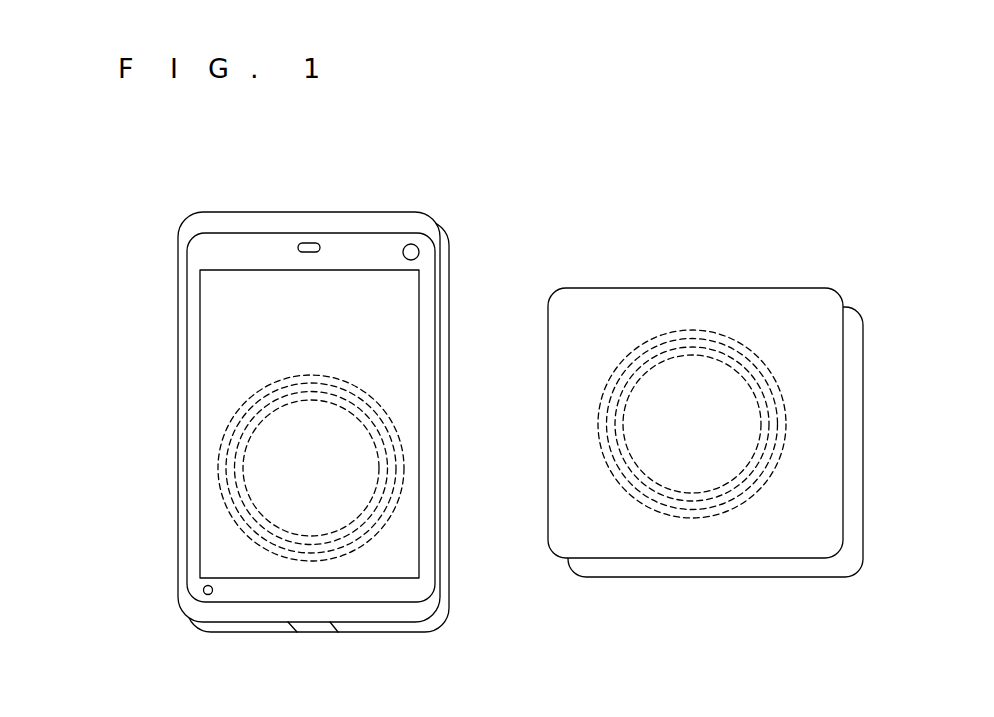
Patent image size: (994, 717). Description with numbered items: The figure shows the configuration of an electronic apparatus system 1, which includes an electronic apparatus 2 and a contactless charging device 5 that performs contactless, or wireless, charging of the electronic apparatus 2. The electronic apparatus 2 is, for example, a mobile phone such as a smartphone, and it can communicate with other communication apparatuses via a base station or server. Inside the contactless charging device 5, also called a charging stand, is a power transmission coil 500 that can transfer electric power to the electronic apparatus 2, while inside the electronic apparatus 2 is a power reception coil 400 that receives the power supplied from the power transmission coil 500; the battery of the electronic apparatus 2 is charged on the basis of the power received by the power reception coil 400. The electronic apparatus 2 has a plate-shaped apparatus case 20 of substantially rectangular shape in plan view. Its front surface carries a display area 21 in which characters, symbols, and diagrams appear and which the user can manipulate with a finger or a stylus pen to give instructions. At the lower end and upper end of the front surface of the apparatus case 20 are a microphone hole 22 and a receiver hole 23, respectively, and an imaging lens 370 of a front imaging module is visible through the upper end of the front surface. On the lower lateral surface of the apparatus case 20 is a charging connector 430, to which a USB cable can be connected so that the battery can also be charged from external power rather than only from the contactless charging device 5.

The electronic apparatus system 1 is at (506, 192).
The electronic apparatus 2 is at (357, 211).
The contactless charging device 5 is at (760, 287).
The apparatus case 20 is at (243, 222).
The display area 21 is at (222, 323).
The microphone hole 22 is at (203, 590).
The receiver hole 23 is at (307, 242).
The imaging lens 370 is at (411, 243).
The power reception coil 400 is at (237, 413).
The charging connector 430 is at (312, 628).
The power transmission coil 500 is at (694, 519).